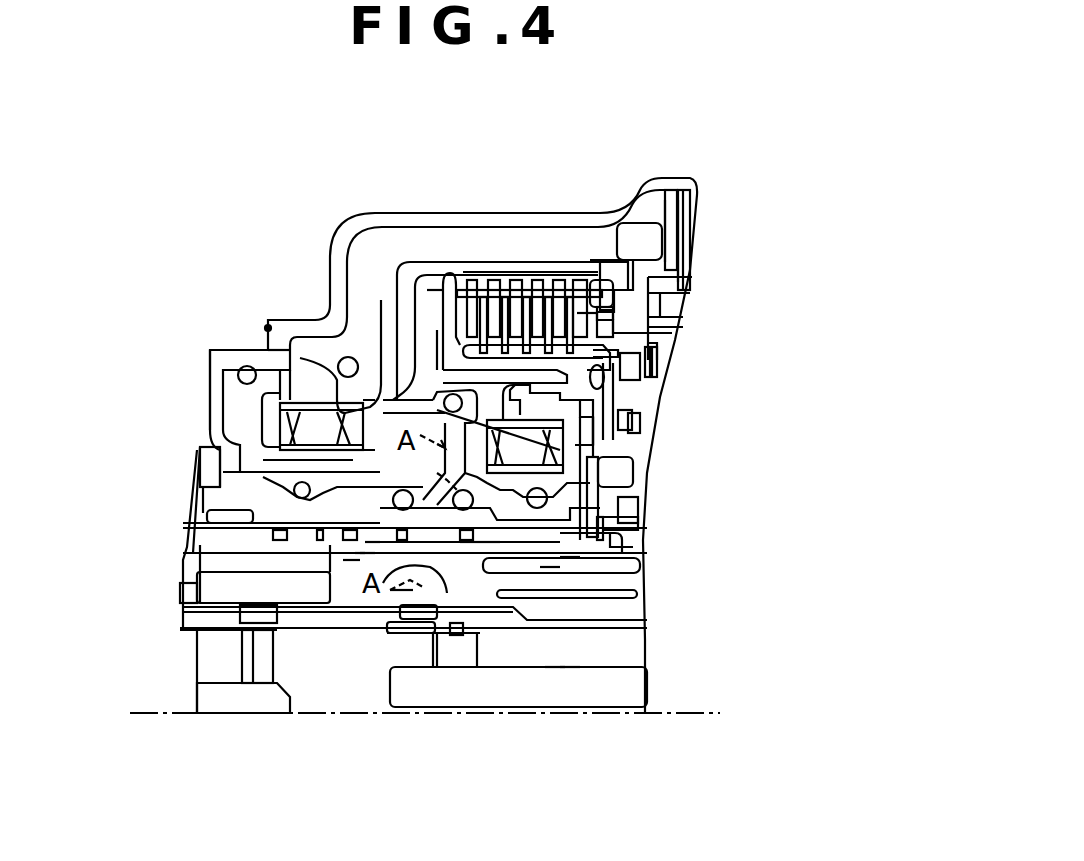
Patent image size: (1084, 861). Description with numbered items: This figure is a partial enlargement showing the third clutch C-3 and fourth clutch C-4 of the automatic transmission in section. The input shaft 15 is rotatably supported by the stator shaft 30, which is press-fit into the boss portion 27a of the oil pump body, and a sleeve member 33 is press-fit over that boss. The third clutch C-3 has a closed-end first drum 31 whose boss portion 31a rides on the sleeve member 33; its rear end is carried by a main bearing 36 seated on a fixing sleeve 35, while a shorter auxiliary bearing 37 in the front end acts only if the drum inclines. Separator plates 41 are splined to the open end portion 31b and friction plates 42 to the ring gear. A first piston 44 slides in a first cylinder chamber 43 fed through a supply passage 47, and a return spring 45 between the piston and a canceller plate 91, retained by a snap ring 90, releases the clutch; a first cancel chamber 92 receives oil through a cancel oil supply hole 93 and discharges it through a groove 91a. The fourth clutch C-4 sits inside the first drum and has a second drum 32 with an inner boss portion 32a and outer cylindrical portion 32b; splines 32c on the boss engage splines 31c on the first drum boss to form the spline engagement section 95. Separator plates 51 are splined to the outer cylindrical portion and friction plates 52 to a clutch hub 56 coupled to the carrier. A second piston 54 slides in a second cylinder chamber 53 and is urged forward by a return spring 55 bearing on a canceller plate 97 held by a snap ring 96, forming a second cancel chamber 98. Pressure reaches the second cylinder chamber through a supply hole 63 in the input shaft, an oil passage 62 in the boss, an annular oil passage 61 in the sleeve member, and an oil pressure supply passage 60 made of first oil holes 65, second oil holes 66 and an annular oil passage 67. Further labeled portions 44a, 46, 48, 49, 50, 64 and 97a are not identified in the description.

The input shaft 15 is at (638, 646).
The boss portion of the oil pump body 27a is at (237, 630).
The stator shaft 30 is at (645, 600).
The first drum 31 is at (377, 210).
The boss portion of the first drum 31a is at (613, 543).
The open end portion of the first drum 31b is at (568, 217).
The splines of the first drum boss 31c is at (580, 482).
The second drum 32 is at (398, 268).
The inner boss portion of the second drum 32a is at (575, 505).
The outer cylindrical portion of the second drum 32b is at (647, 222).
The splines of the second drum boss 32c is at (617, 560).
The sleeve member 33 is at (263, 562).
The fixing sleeve 35 is at (553, 567).
The main bearing 36 is at (557, 547).
The auxiliary bearing 37 is at (258, 522).
The separator plates 41 is at (673, 219).
The friction plates 42 is at (687, 256).
The first cylinder chamber 43 is at (230, 418).
The first piston 44 is at (265, 326).
The piston pressing portion 44a is at (460, 237).
The return spring 45 is at (390, 447).
The return spring 46 is at (282, 501).
The supply passage 47 is at (360, 560).
The oil passage 48 is at (357, 565).
The oil passage 49 is at (253, 705).
The oil passage 50 is at (230, 705).
The separator plates 51 is at (538, 278).
The friction plates 52 is at (588, 277).
The second cylinder chamber 53 is at (360, 345).
The second piston 54 is at (427, 340).
The return spring 55 is at (580, 447).
The clutch hub 56 is at (613, 380).
The oil pressure supply passage 60 is at (413, 613).
The annular oil passage 61 is at (480, 540).
The oil passage 62 is at (373, 540).
The supply hole 63 is at (410, 622).
The oil passage 64 is at (567, 683).
The first oil holes 65 is at (467, 540).
The second oil holes 66 is at (440, 480).
The annular oil passage 67 is at (395, 462).
The snap ring 90 is at (243, 560).
The canceller plate 91 is at (393, 395).
The cancel oil discharge groove 91a is at (258, 469).
The first cancel chamber 92 is at (410, 375).
The cancel oil supply hole 93 is at (370, 600).
The spline engagement section 95 is at (557, 683).
The snap ring 96 is at (620, 530).
The canceller plate 97 is at (640, 417).
The seal lip 97a is at (610, 522).
The second cancel chamber 98 is at (617, 397).
The third clutch C-3 is at (683, 172).
The fourth clutch C-4 is at (505, 270).